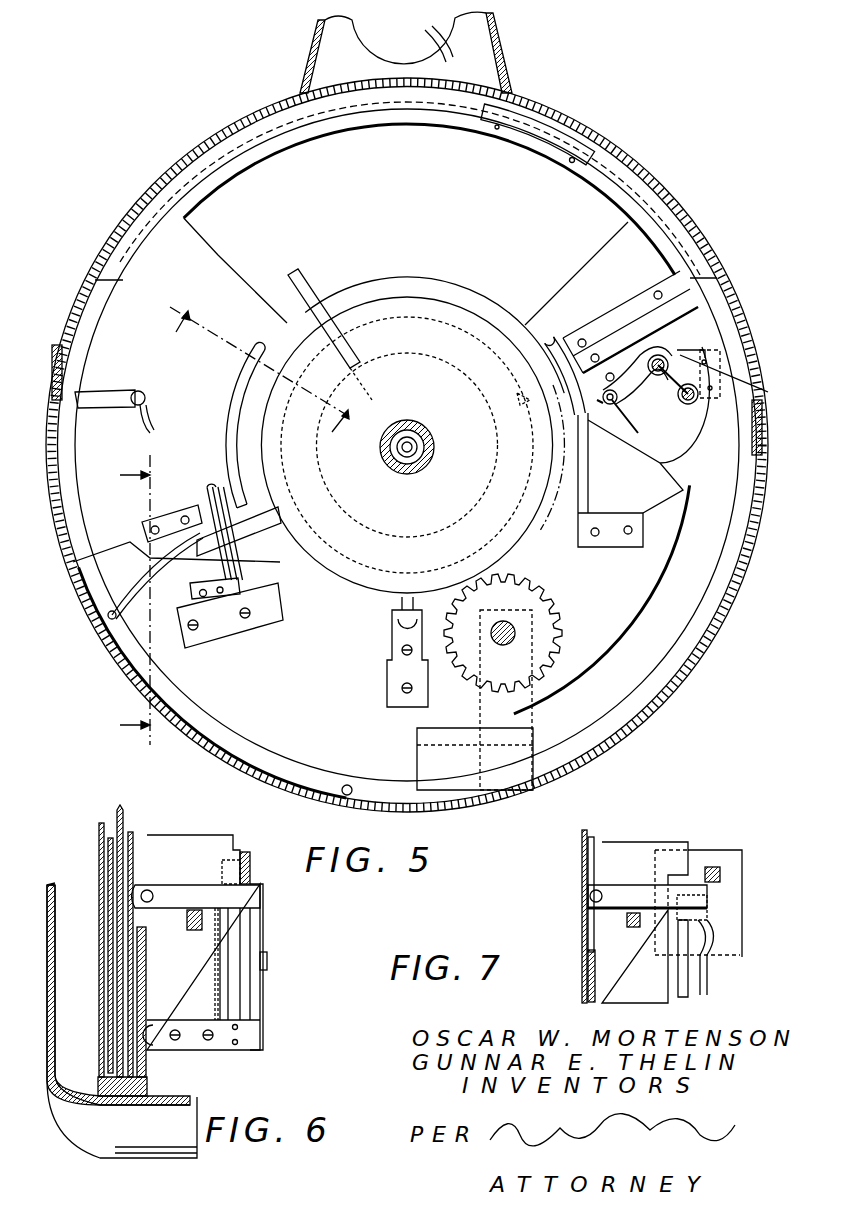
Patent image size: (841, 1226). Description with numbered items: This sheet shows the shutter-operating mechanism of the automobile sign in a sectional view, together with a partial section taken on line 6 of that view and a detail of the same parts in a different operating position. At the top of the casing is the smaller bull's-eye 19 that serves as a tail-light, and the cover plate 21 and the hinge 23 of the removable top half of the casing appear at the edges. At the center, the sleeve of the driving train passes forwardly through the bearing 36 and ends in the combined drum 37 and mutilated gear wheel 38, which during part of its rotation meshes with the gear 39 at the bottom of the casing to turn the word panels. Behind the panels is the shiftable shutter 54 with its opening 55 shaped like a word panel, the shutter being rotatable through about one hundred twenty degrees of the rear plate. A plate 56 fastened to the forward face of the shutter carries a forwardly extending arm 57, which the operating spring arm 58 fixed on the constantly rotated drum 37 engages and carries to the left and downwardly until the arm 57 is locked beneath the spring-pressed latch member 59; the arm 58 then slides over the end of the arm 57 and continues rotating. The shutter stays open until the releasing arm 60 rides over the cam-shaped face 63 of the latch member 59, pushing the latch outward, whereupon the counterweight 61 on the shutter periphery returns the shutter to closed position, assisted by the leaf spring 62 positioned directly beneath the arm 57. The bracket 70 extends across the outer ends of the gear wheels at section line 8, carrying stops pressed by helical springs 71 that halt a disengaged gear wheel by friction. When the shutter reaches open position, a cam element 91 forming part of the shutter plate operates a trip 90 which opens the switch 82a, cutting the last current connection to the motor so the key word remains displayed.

In FIG. 5, the section line 6— 6 is at (124, 600).
In FIG. 5, the section line 8— 8 is at (254, 384).
In FIG. 5, the bull's-eye 19 is at (430, 40).
In FIG. 6, the cover plate 21 is at (70, 1130).
In FIG. 5, the hinge 23 is at (58, 442).
In FIG. 5, the bearing 36 is at (422, 460).
In FIG. 5, the drum 37 is at (380, 540).
In FIG. 5, the mutilated gear wheel 38 is at (495, 328).
In FIG. 5, the gear 39 is at (556, 612).
In FIG. 5, the shutter 54 is at (185, 275).
In FIG. 6, the shutter 54 is at (130, 840).
In FIG. 7, the shutter 54 is at (583, 840).
In FIG. 5, the opening 55 is at (218, 255).
In FIG. 5, the plate 56 is at (163, 522).
In FIG. 6, the plate 56 is at (140, 870).
In FIG. 7, the plate 56 is at (596, 880).
In FIG. 5, the arm 57 is at (208, 500).
In FIG. 6, the arm 57 is at (170, 892).
In FIG. 7, the arm 57 is at (638, 892).
In FIG. 5, the operating spring arm 58 is at (282, 503).
In FIG. 6, the operating spring arm 58 is at (268, 962).
In FIG. 7, the operating spring arm 58 is at (715, 867).
In FIG. 5, the latch member 59 is at (213, 581).
In FIG. 6, the latch member 59 is at (265, 912).
In FIG. 7, the latch member 59 is at (712, 945).
In FIG. 5, the releasing arm 60 is at (307, 290).
In FIG. 5, the counterweight 61 is at (567, 142).
In FIG. 5, the leaf spring 62 is at (133, 597).
In FIG. 6, the leaf spring 62 is at (187, 915).
In FIG. 7, the leaf spring 62 is at (633, 927).
In FIG. 5, the cam-shaped face 63 is at (210, 485).
In FIG. 6, the cam-shaped face 63 is at (245, 852).
In FIG. 7, the cam-shaped face 63 is at (700, 915).
In FIG. 5, the bracket 70 is at (248, 368).
In FIG. 5, the helical springs 71 is at (517, 392).
In FIG. 5, the switch 82a is at (630, 418).
In FIG. 5, the trip 90 is at (785, 375).
In FIG. 5, the cam element 91 is at (698, 348).